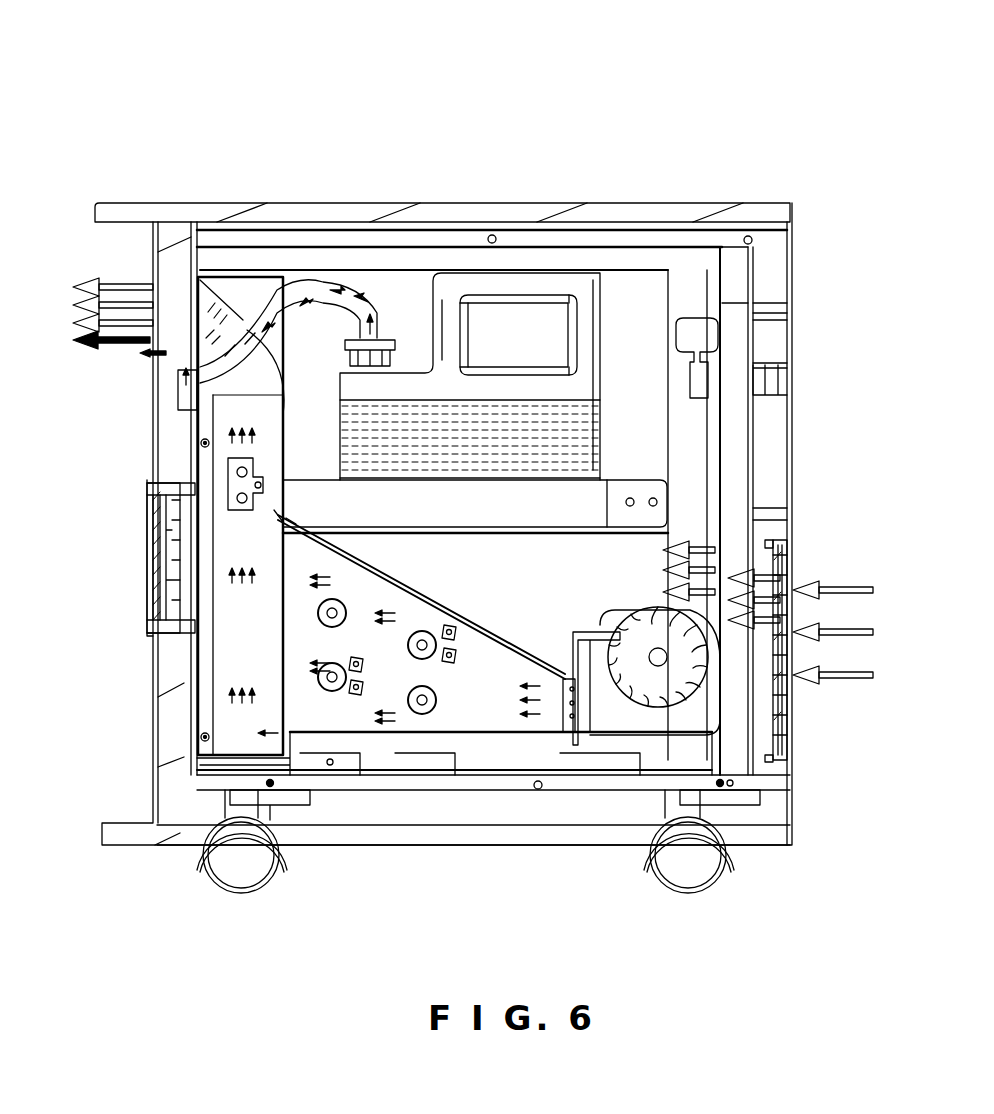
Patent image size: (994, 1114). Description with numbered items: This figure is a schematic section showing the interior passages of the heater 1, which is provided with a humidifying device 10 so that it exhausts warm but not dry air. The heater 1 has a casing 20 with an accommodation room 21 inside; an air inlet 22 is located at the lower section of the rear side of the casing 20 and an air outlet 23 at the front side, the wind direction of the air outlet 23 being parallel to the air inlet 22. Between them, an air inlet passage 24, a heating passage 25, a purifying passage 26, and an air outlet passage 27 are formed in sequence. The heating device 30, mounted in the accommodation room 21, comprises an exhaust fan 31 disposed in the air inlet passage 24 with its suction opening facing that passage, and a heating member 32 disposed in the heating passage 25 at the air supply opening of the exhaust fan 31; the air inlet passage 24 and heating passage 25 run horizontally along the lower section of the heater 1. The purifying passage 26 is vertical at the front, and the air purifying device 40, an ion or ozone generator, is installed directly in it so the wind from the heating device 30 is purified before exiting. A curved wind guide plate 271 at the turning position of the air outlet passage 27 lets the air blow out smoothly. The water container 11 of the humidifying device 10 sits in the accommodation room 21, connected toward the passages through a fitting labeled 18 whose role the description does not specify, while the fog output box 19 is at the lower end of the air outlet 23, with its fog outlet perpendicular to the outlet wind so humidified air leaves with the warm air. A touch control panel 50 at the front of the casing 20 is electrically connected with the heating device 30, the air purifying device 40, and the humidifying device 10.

The heater 1 is at (247, 104).
The casing 20 is at (165, 200).
The air outlet 23 is at (160, 297).
The fog output box 19 is at (185, 385).
The air outlet passage 27 is at (230, 318).
The curved wind guide plate 271 is at (247, 330).
The pipe fitting 18 is at (330, 290).
The humidifying device 10 is at (522, 330).
The water container 11 is at (450, 308).
The accommodation room 21 is at (650, 360).
The air purifying device 40 is at (228, 480).
The purifying passage 26 is at (228, 535).
The touch control panel 50 is at (140, 590).
The air inlet passage 24 is at (712, 583).
The air inlet 22 is at (790, 665).
The heating member 32 is at (438, 703).
The heating passage 25 is at (475, 700).
The heating device 30 is at (590, 720).
The exhaust fan 31 is at (640, 700).